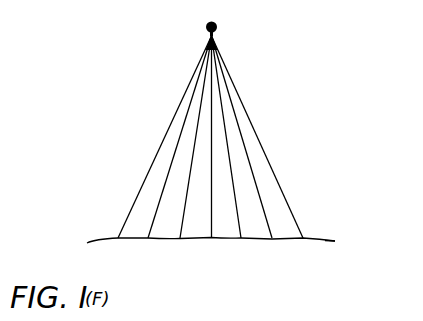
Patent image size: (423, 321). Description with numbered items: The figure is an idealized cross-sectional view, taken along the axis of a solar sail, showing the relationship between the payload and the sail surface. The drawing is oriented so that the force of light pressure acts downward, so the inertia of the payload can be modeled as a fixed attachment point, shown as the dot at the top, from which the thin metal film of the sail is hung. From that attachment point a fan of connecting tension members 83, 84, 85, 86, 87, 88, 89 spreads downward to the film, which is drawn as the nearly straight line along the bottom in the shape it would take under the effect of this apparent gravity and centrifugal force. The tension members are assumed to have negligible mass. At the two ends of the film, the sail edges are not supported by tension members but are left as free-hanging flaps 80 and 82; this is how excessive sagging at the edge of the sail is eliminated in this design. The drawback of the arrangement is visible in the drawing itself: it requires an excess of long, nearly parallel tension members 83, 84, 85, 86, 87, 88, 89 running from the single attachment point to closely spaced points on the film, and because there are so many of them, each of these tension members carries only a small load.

The free-hanging flap 80 is at (95, 243).
The free-hanging flap 82 is at (328, 243).
The tension member 83 is at (150, 162).
The tension member 84 is at (157, 197).
The tension member 85 is at (203, 115).
The tension member 86 is at (215, 140).
The tension member 87 is at (234, 165).
The tension member 88 is at (263, 191).
The tension member 89 is at (297, 212).